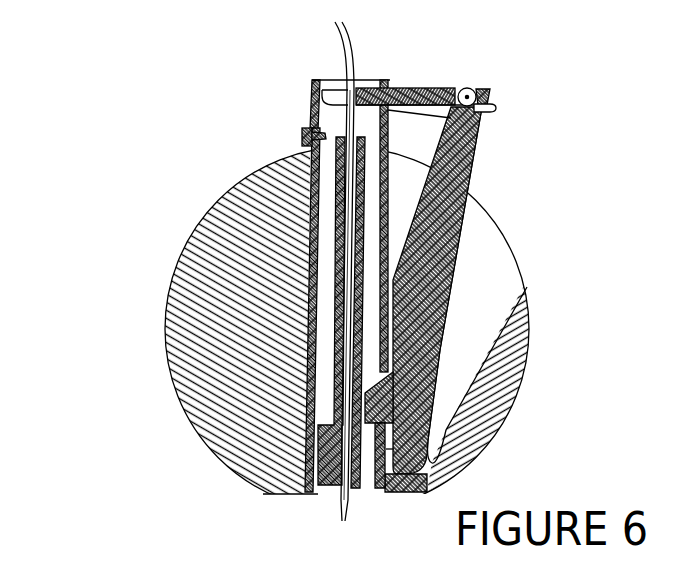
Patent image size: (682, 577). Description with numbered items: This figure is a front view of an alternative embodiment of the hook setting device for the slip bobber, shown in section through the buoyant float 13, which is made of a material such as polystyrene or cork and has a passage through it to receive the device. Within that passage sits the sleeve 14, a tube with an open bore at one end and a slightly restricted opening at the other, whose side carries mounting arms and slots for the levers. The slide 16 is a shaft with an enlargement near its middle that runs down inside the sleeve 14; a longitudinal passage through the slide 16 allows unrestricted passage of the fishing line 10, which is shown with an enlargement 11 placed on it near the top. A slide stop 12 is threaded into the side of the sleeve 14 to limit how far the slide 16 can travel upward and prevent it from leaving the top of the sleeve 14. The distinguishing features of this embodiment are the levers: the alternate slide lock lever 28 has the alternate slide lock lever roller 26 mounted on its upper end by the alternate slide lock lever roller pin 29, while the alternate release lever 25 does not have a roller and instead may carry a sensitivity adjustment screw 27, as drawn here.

The fishing line 10 is at (340, 45).
The enlargement placed on fishing line 11 is at (346, 82).
The slide stop 12 is at (303, 135).
The float 13 is at (236, 366).
The sleeve 14 is at (312, 292).
The slide 16 is at (335, 391).
The alternative embodiment of release lever 25 is at (423, 90).
The alternative embodiment of slide lock lever roller 26 is at (468, 95).
The alternative embodiment of sensitivity adjustment screw 27 is at (496, 108).
The alternative embodiment of slide lock lever 28 is at (405, 436).
The alternative embodiment of slide lock lever roller pin 29 is at (484, 90).